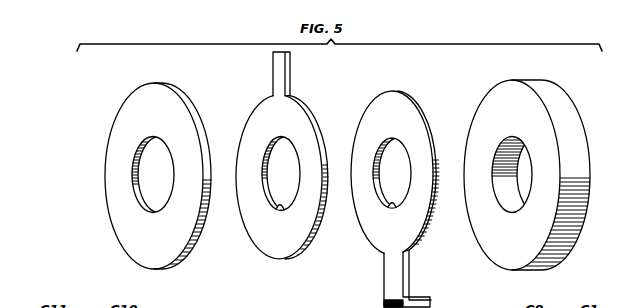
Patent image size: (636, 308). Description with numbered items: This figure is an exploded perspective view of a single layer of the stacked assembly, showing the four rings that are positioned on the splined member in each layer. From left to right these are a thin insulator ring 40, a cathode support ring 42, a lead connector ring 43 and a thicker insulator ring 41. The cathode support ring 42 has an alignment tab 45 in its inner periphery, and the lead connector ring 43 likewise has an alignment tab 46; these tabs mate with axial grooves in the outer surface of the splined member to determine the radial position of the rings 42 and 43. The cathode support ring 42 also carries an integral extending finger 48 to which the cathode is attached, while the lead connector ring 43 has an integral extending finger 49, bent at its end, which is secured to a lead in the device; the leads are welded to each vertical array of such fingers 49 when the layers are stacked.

The thin insulator ring 40 is at (106, 157).
The thicker insulator ring 41 is at (506, 254).
The cathode support ring 42 is at (270, 169).
The lead connector ring 43 is at (392, 193).
The alignment tab 45 is at (280, 206).
The alignment tab 46 is at (391, 208).
The extending finger 48 is at (278, 76).
The fingers 49 is at (394, 293).